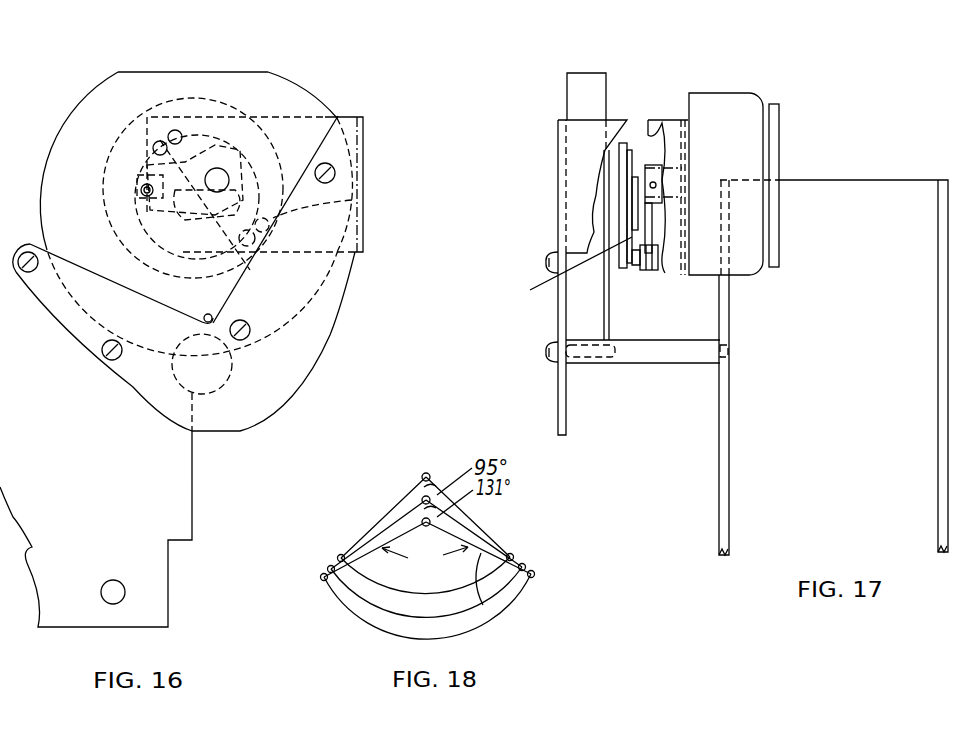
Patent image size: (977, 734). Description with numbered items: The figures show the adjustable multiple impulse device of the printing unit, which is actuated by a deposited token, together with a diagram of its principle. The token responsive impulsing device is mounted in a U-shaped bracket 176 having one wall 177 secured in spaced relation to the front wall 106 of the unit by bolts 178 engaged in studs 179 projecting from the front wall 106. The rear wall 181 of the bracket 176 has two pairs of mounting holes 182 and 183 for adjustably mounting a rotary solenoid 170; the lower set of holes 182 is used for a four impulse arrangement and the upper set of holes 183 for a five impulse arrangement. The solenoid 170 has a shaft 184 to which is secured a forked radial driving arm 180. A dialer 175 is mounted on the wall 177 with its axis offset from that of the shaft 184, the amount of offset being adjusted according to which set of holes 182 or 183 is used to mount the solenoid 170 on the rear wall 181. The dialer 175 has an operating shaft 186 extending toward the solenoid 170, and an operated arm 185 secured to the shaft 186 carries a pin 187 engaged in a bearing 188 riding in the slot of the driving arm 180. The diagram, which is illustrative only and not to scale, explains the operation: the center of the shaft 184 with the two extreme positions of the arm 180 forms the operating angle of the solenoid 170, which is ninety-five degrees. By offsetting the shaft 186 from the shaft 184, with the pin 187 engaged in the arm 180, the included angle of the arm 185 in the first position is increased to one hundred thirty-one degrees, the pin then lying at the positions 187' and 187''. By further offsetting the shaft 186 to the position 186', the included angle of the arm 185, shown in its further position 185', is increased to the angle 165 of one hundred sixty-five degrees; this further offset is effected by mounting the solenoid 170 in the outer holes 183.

In FIG. 16, the front wall 106 is at (163, 497).
In FIG. 17, the front wall 106 is at (728, 450).
In FIG. 18, the included angle of arm 185 165 is at (425, 559).
In FIG. 17, the rotary solenoid 170 is at (723, 100).
In FIG. 17, the dialer 175 is at (580, 88).
In FIG. 16, the U-shaped bracket 176 is at (295, 358).
In FIG. 17, the U-shaped bracket 176 is at (560, 412).
In FIG. 16, the wall 177 is at (150, 402).
In FIG. 16, the bolts 178 is at (103, 355).
In FIG. 17, the bolts 178 is at (552, 360).
In FIG. 17, the studs 179 is at (655, 358).
In FIG. 16, the forked radial driving arm 180 is at (188, 162).
In FIG. 18, the forked radial driving arm 180 is at (420, 492).
In FIG. 16, the rear wall 181 is at (337, 118).
In FIG. 17, the rear wall 181 is at (682, 253).
In FIG. 16, the mounting holes 182 is at (143, 132).
In FIG. 16, the mounting holes 183 is at (168, 160).
In FIG. 18, the shaft 184 is at (428, 474).
In FIG. 16, the operated arm 185 is at (231, 226).
In FIG. 17, the operated arm 185 is at (562, 275).
In FIG. 18, the operated arm 185 is at (454, 567).
In FIG. 18, the operated arm position 185' is at (446, 596).
In FIG. 16, the operating shaft 186 is at (147, 209).
In FIG. 18, the operating shaft 186 is at (426, 529).
In FIG. 18, the further offset position of shaft 186 186' is at (422, 546).
In FIG. 16, the pin 187 is at (81, 165).
In FIG. 17, the pin 187 is at (655, 291).
In FIG. 18, the pin 187 is at (559, 573).
In FIG. 18, the pin position 187' is at (443, 584).
In FIG. 18, the pin position 187'' is at (551, 553).
In FIG. 17, the bearing 188 is at (635, 177).